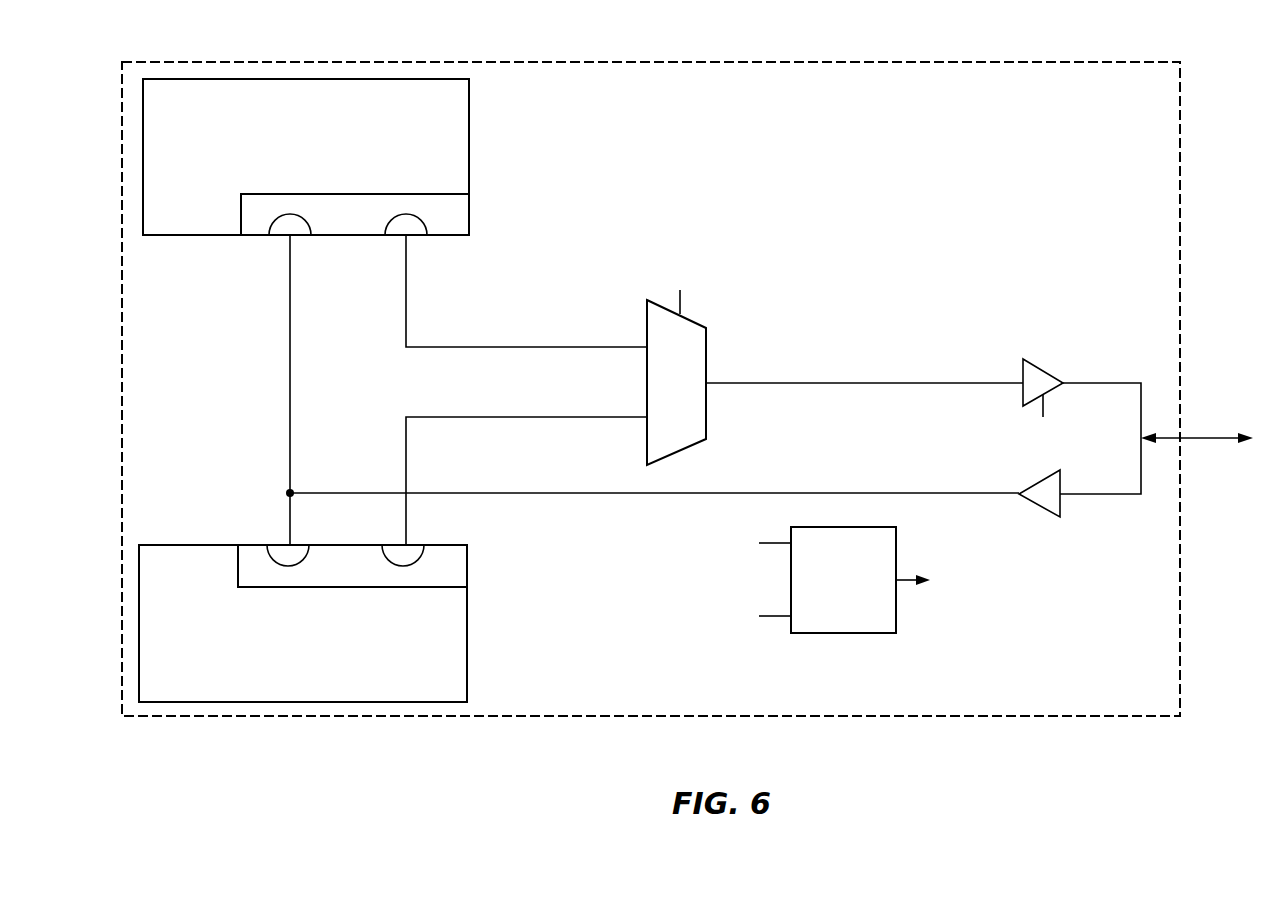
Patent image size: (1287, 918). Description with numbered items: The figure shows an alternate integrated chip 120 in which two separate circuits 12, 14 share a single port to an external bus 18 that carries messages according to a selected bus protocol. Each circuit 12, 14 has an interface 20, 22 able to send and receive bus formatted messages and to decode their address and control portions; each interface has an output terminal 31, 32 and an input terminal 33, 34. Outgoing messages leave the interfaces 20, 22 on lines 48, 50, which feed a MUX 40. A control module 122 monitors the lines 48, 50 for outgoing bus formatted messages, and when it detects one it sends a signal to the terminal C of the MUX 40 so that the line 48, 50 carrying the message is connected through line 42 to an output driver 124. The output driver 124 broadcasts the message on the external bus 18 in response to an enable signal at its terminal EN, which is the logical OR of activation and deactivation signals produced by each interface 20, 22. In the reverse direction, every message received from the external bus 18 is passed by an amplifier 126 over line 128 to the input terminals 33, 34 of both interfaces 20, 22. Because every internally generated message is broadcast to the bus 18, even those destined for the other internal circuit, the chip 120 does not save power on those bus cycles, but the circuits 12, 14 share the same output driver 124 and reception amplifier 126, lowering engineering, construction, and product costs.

The integrated chip 120 is at (1165, 66).
The circuit 12 is at (284, 170).
The circuit 14 is at (283, 635).
The interface 20 is at (455, 208).
The interface 22 is at (455, 565).
The output terminal 31 is at (422, 238).
The output terminal 32 is at (418, 544).
The input terminal 33 is at (275, 236).
The input terminal 34 is at (273, 544).
The MUX 40 is at (663, 394).
The line 42 is at (750, 383).
The line 48 is at (406, 283).
The line 50 is at (406, 440).
The external bus 18 is at (1210, 437).
The control module 122 is at (823, 593).
The output driver 124 is at (1030, 357).
The amplifier 126 is at (1040, 478).
The line 128 is at (585, 494).